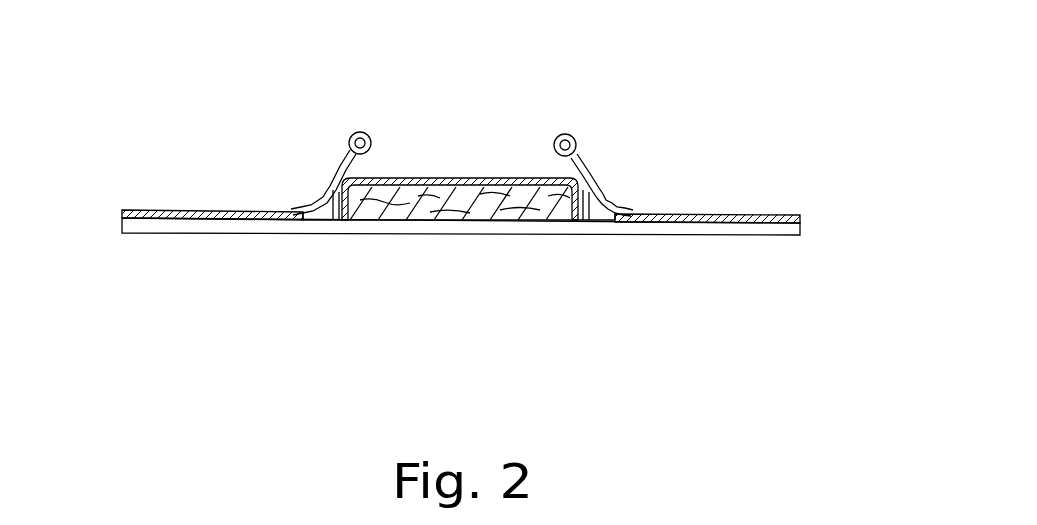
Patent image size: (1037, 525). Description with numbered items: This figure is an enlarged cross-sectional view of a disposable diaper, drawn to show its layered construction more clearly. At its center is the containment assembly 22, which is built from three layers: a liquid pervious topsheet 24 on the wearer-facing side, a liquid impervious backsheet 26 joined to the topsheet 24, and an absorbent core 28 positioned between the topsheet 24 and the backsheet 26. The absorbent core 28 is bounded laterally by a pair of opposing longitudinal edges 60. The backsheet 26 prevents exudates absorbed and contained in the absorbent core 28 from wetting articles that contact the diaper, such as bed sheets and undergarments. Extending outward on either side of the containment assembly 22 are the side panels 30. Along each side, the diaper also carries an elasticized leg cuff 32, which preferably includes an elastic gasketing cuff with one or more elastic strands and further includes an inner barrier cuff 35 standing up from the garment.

The containment assembly 22 is at (420, 147).
The liquid pervious topsheet 24 is at (529, 178).
The liquid impervious backsheet 26 is at (800, 227).
The absorbent core 28 is at (450, 192).
The side panels 30 is at (163, 193).
The elasticized leg cuffs 32 is at (343, 139).
The inner barrier cuff 35 is at (373, 134).
The longitudinal edges 60 is at (320, 200).